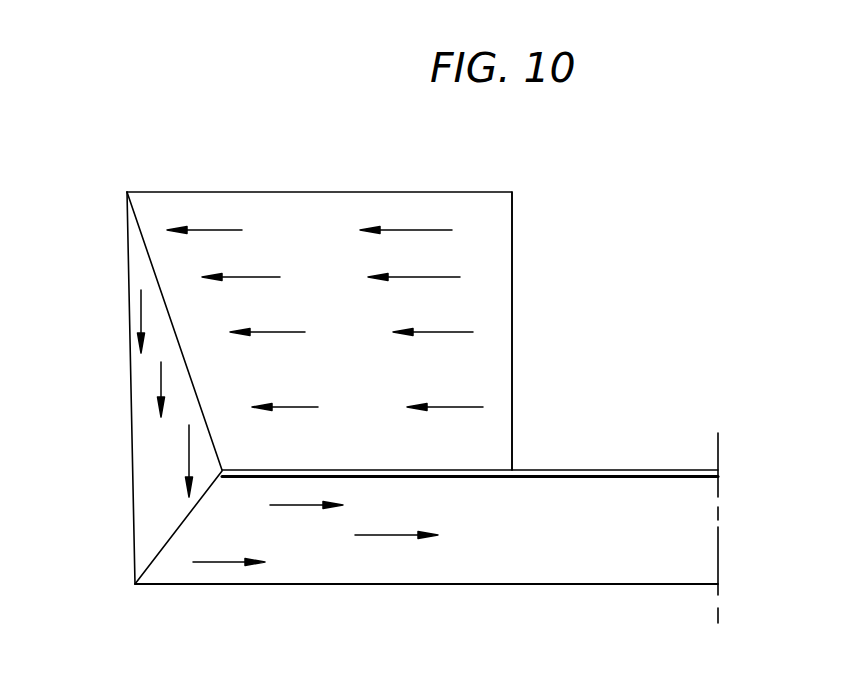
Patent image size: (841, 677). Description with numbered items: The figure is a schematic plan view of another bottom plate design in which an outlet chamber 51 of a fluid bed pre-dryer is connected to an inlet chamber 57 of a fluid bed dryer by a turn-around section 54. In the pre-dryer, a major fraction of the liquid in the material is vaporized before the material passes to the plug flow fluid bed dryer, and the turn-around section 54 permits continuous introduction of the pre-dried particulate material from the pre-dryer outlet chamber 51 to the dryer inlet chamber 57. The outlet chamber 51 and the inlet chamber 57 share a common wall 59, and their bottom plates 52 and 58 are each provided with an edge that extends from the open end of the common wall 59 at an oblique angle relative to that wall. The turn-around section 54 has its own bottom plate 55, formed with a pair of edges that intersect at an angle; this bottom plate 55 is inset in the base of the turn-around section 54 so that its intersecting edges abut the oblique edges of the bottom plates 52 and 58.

The outlet chamber 51 is at (300, 192).
The bottom plate 52 is at (495, 292).
The turn-around section 54 is at (113, 493).
The bottom plate 55 is at (162, 457).
The inlet chamber 57 is at (342, 586).
The bottom plate 58 is at (288, 542).
The common wall 59 is at (601, 470).